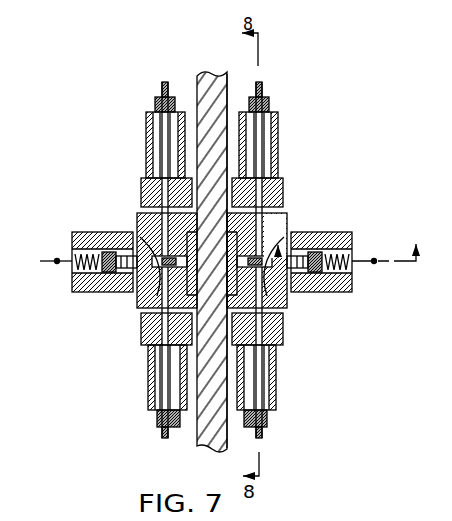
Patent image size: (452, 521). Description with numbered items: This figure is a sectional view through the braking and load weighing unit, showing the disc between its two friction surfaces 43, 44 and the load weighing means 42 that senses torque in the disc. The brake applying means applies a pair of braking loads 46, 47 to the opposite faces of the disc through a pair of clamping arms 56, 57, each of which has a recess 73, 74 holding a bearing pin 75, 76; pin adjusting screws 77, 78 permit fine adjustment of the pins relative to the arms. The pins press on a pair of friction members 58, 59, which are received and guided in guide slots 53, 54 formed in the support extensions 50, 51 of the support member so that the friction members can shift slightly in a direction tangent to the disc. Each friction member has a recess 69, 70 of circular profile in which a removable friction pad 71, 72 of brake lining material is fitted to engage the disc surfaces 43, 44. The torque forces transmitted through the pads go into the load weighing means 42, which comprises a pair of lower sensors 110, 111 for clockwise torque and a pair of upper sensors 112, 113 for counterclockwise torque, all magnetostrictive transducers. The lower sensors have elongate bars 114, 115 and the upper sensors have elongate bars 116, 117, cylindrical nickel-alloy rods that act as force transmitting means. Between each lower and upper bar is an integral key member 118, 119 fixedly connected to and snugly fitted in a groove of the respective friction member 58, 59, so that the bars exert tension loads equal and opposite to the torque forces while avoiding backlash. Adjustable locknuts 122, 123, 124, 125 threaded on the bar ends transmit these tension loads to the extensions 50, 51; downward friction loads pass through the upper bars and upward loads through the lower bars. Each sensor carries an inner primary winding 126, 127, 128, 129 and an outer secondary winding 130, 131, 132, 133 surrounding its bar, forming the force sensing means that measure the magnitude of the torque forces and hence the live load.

The load weighing means 42 is at (331, 68).
The friction surface 43 is at (197, 80).
The friction surface 44 is at (227, 78).
The braking load 46 is at (56, 264).
The braking load 47 is at (375, 263).
The guide extension 50 is at (142, 183).
The guide extension 51 is at (283, 178).
The guide slot 53 is at (144, 346).
The guide slot 54 is at (288, 314).
The clamping arm 56 is at (73, 292).
The clamping arm 57 is at (355, 286).
The friction member 58 is at (147, 295).
The friction member 59 is at (289, 297).
The recess 69 is at (150, 373).
The recess 70 is at (286, 344).
The friction pad 71 is at (173, 228).
The friction pad 72 is at (233, 236).
The recess 73 is at (97, 247).
The recess 74 is at (338, 248).
The bearing pin 75 is at (132, 247).
The bearing pin 76 is at (298, 248).
The pin adjusting screw 77 is at (74, 246).
The pin adjusting screw 78 is at (355, 249).
The lower sensor 110 is at (88, 360).
The lower sensor 111 is at (325, 449).
The upper sensor 112 is at (132, 90).
The upper sensor 113 is at (299, 70).
The elongate bar 114 is at (160, 423).
The elongate bar 115 is at (281, 408).
The elongate bar 116 is at (148, 115).
The elongate bar 117 is at (270, 116).
The key member 118 is at (147, 305).
The key member 119 is at (287, 307).
The locknut 122 is at (163, 434).
The locknut 123 is at (271, 428).
The locknut 124 is at (158, 98).
The locknut 125 is at (266, 100).
The primary winding 126 is at (153, 393).
The primary winding 127 is at (267, 372).
The primary winding 128 is at (157, 143).
The primary winding 129 is at (263, 133).
The secondary winding 130 is at (158, 410).
The secondary winding 131 is at (276, 392).
The secondary winding 132 is at (148, 153).
The secondary winding 133 is at (266, 143).